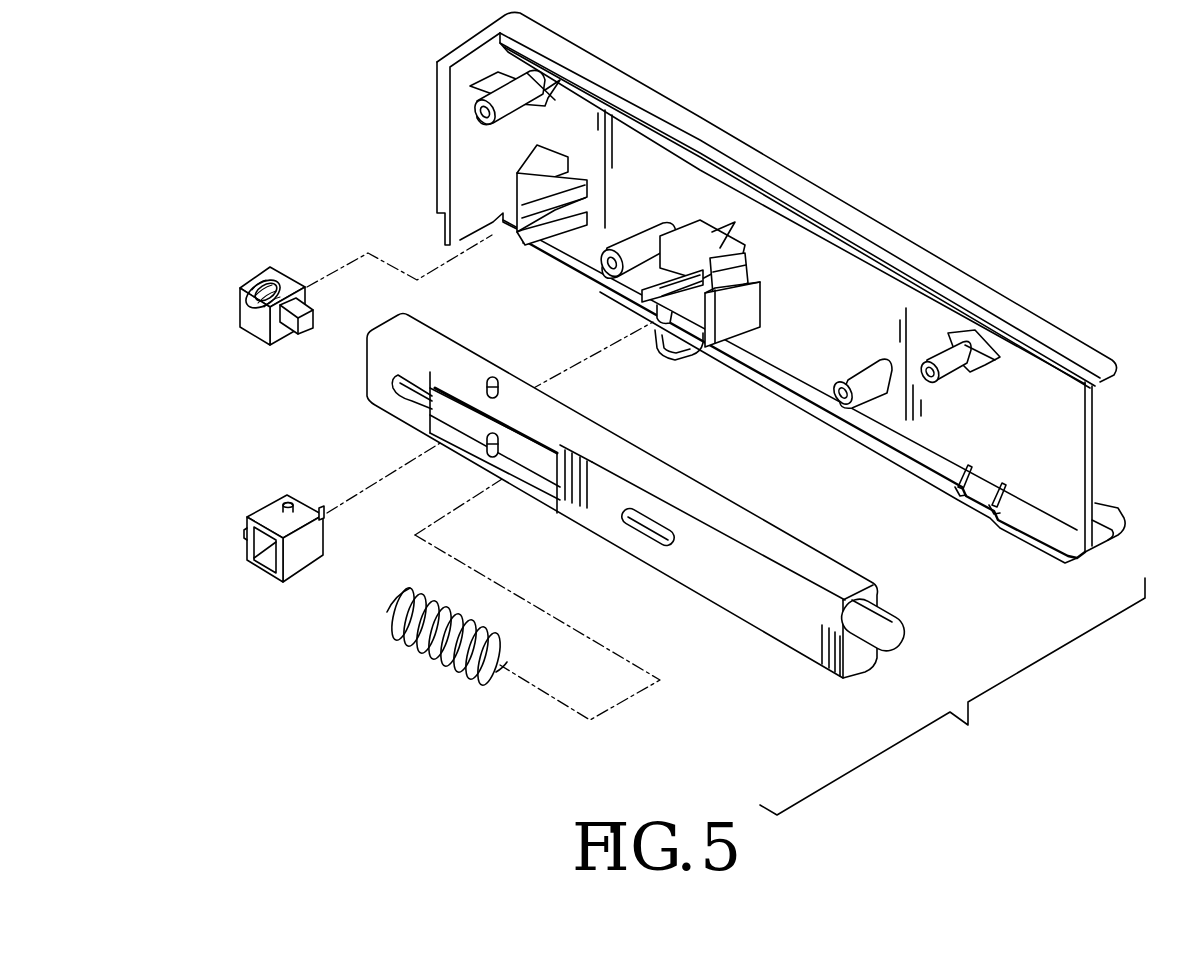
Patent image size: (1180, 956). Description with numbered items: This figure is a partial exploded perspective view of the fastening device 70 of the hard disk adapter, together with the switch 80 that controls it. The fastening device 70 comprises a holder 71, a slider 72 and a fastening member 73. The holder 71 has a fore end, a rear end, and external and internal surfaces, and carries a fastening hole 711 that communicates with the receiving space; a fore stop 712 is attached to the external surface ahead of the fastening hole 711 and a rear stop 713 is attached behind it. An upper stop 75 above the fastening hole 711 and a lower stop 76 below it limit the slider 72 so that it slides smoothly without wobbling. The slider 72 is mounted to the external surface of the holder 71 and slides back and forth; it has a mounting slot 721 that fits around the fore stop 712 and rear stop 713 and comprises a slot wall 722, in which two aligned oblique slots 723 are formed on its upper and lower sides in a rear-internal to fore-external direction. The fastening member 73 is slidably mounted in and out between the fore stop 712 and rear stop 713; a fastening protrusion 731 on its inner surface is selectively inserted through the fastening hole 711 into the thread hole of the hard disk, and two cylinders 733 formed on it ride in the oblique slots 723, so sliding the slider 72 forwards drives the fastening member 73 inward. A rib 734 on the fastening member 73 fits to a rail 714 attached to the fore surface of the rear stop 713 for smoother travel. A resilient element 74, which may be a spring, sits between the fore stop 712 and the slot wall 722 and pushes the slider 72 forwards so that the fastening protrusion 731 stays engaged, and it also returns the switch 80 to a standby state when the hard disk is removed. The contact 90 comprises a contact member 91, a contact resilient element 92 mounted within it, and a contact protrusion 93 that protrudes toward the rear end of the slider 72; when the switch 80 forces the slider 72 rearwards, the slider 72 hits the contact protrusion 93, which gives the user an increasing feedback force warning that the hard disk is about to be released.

The fastening device 70 is at (799, 315).
The holder 71 is at (1070, 410).
The fastening hole 711 is at (737, 268).
The fore stop 712 is at (752, 310).
The rear stop 713 is at (650, 292).
The rail 714 is at (660, 320).
The slider 72 is at (828, 660).
The mounting slot 721 is at (558, 492).
The slot wall 722 is at (440, 432).
The oblique slot 723 is at (492, 377).
The fastening member 73 is at (300, 572).
The fastening protrusion 731 is at (322, 510).
The cylinder 733 is at (283, 500).
The rib 734 is at (246, 532).
The resilient element 74 is at (440, 658).
The upper stop 75 is at (705, 237).
The lower stop 76 is at (682, 353).
The switch 80 is at (898, 634).
The contact 90 is at (266, 284).
The contact member 91 is at (253, 328).
The contact resilient element 92 is at (268, 278).
The contact protrusion 93 is at (297, 336).